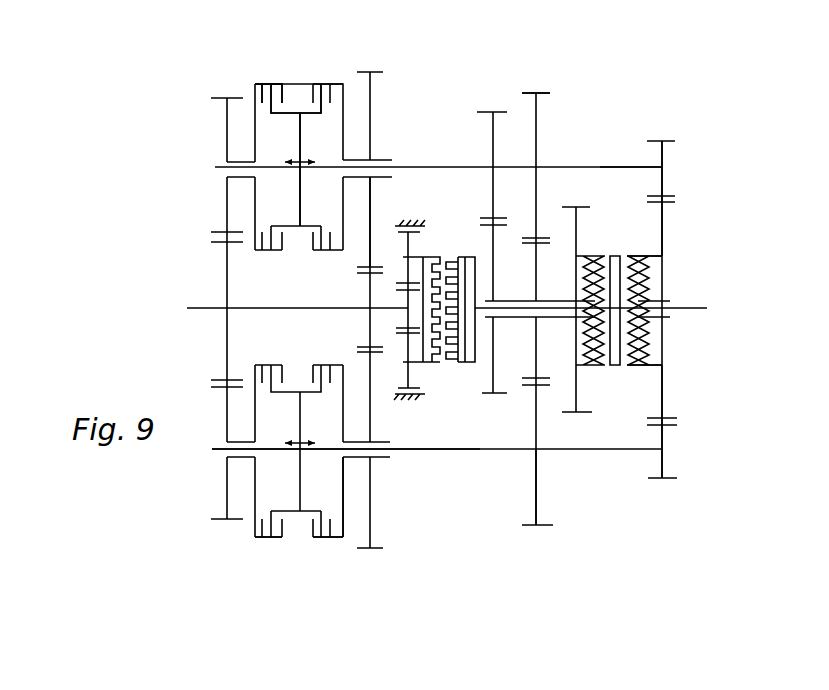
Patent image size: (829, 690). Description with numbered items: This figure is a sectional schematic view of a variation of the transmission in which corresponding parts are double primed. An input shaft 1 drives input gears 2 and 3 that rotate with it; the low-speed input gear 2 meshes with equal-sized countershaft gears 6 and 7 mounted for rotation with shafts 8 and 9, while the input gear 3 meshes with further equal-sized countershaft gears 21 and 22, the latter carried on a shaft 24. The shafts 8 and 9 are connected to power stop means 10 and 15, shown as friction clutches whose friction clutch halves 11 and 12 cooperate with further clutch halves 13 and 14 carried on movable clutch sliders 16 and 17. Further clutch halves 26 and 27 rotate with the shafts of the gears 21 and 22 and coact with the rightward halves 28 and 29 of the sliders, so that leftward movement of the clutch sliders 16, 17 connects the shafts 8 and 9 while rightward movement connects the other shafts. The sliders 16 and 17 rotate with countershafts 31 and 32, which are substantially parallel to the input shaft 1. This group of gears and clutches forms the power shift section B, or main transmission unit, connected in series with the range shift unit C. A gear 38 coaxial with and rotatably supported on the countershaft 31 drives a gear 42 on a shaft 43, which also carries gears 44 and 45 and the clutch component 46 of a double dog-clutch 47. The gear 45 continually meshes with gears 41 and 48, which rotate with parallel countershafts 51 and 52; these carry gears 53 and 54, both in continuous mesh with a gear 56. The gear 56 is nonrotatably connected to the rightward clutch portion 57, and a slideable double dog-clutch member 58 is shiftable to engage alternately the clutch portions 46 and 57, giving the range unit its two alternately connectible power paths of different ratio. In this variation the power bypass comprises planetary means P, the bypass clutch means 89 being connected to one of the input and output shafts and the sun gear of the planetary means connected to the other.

The input shaft 1 is at (194, 312).
The low-speed input gear 2 is at (228, 274).
The input gear 3 is at (370, 296).
The countershaft gear 6 is at (227, 150).
The countershaft gear 7 is at (227, 428).
The shaft 8 is at (239, 160).
The shaft 9 is at (242, 442).
The power stop means 10 is at (291, 68).
The friction clutch half 11 is at (256, 133).
The friction clutch half 12 is at (258, 497).
The clutch half 13 is at (268, 95).
The clutch half 14 is at (270, 380).
The power stop means 15 is at (293, 534).
The clutch slider 16 is at (302, 133).
The clutch slider 17 is at (300, 430).
The countershaft gear 21 is at (370, 240).
The countershaft gear 22 is at (371, 528).
The shaft 24 is at (348, 440).
The clutch half 26 is at (344, 132).
The clutch half 27 is at (345, 518).
The rightward half of clutch slider 28 is at (322, 236).
The rightward half of clutch slider 29 is at (325, 515).
The countershaft 31 is at (438, 151).
The countershaft 32 is at (411, 449).
The gear 38 is at (493, 143).
The gear 41 is at (537, 515).
The gear 42 is at (493, 245).
The shaft 43 is at (513, 300).
The gear 44 is at (550, 276).
The gear 45 is at (574, 217).
The clutch component 46 is at (588, 256).
The double dog-clutch 47 is at (617, 248).
The gear 48 is at (537, 112).
The countershaft 51 is at (582, 450).
The countershaft 52 is at (612, 165).
The gear 53 is at (663, 447).
The gear 54 is at (663, 183).
The gear 56 is at (663, 392).
The rightward clutch portion 57 is at (652, 262).
The double dog-clutch member 58 is at (628, 256).
The clutch means 89 is at (443, 250).
The power shift section B is at (314, 60).
The range shift unit C is at (542, 83).
The planetary means P is at (394, 246).